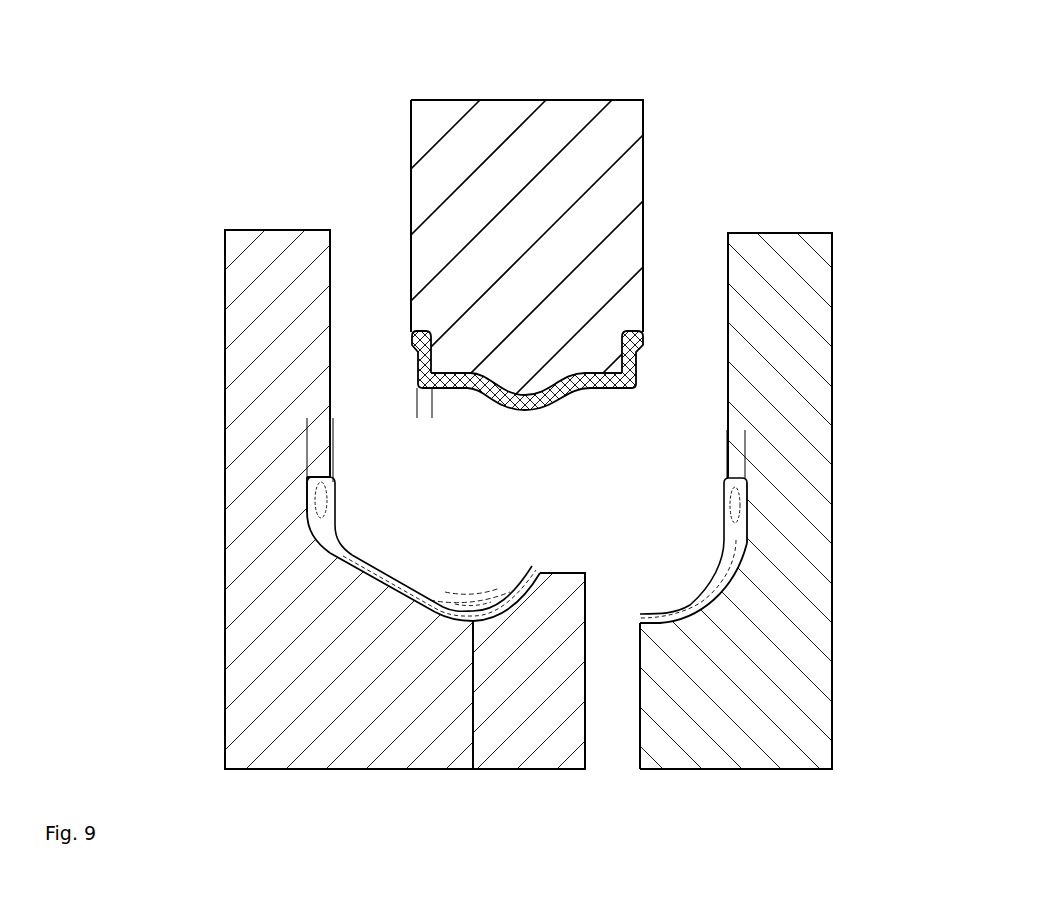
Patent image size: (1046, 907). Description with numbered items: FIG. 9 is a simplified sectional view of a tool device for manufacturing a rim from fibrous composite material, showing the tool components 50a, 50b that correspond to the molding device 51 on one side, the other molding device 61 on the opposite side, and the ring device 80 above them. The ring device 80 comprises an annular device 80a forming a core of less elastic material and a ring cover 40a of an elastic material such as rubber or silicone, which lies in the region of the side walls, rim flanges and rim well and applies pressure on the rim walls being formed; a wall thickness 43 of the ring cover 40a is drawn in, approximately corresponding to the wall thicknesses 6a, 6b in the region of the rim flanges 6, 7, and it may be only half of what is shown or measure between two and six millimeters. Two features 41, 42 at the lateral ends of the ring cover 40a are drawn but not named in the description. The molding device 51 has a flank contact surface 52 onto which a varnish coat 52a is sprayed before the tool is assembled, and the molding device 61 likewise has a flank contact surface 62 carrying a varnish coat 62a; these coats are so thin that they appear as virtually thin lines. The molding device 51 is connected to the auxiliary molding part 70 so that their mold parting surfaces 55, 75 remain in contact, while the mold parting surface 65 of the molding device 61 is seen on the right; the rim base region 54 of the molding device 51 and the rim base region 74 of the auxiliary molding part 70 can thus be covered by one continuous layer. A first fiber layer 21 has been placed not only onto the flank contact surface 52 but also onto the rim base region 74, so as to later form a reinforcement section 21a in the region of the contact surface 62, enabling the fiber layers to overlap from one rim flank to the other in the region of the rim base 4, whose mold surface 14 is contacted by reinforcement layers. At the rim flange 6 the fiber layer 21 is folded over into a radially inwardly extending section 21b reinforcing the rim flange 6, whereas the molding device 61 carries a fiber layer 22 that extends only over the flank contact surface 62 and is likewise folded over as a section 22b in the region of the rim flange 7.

The tool component 50a is at (282, 776).
The tool component 50b is at (470, 96).
The ring device 80 is at (353, 111).
The annular device 80a is at (408, 160).
The ring cover 40a is at (530, 409).
The left protrusion of punch tip 41 is at (418, 366).
The right protrusion of punch tip 42 is at (640, 353).
The wall thickness 43 is at (446, 407).
The molding device 61 is at (760, 733).
The flank contact surface 62 is at (727, 578).
The varnish coat 62a is at (733, 554).
The mold parting surface 65 is at (636, 723).
The wall thickness 6b is at (757, 443).
The wall thickness 6a is at (345, 434).
The molding device 51 is at (338, 733).
The flank contact surface 52 is at (350, 570).
The varnish coat 52a is at (322, 548).
The rim base region 54 is at (398, 617).
The mold parting surface 55 is at (471, 724).
The auxiliary molding part 70 is at (529, 671).
The rim base region 74 is at (513, 607).
The mold parting surface 75 is at (476, 724).
The mold surface 14 is at (478, 633).
The fiber layer 21 is at (385, 594).
The reinforcement section 21a is at (533, 574).
The folded-over section 21b is at (333, 523).
The rim flange 6 is at (333, 492).
The rim base 4 is at (473, 590).
The fiber layer 22 is at (685, 604).
The folded-over section 22b is at (723, 530).
The rim flange 7 is at (727, 492).